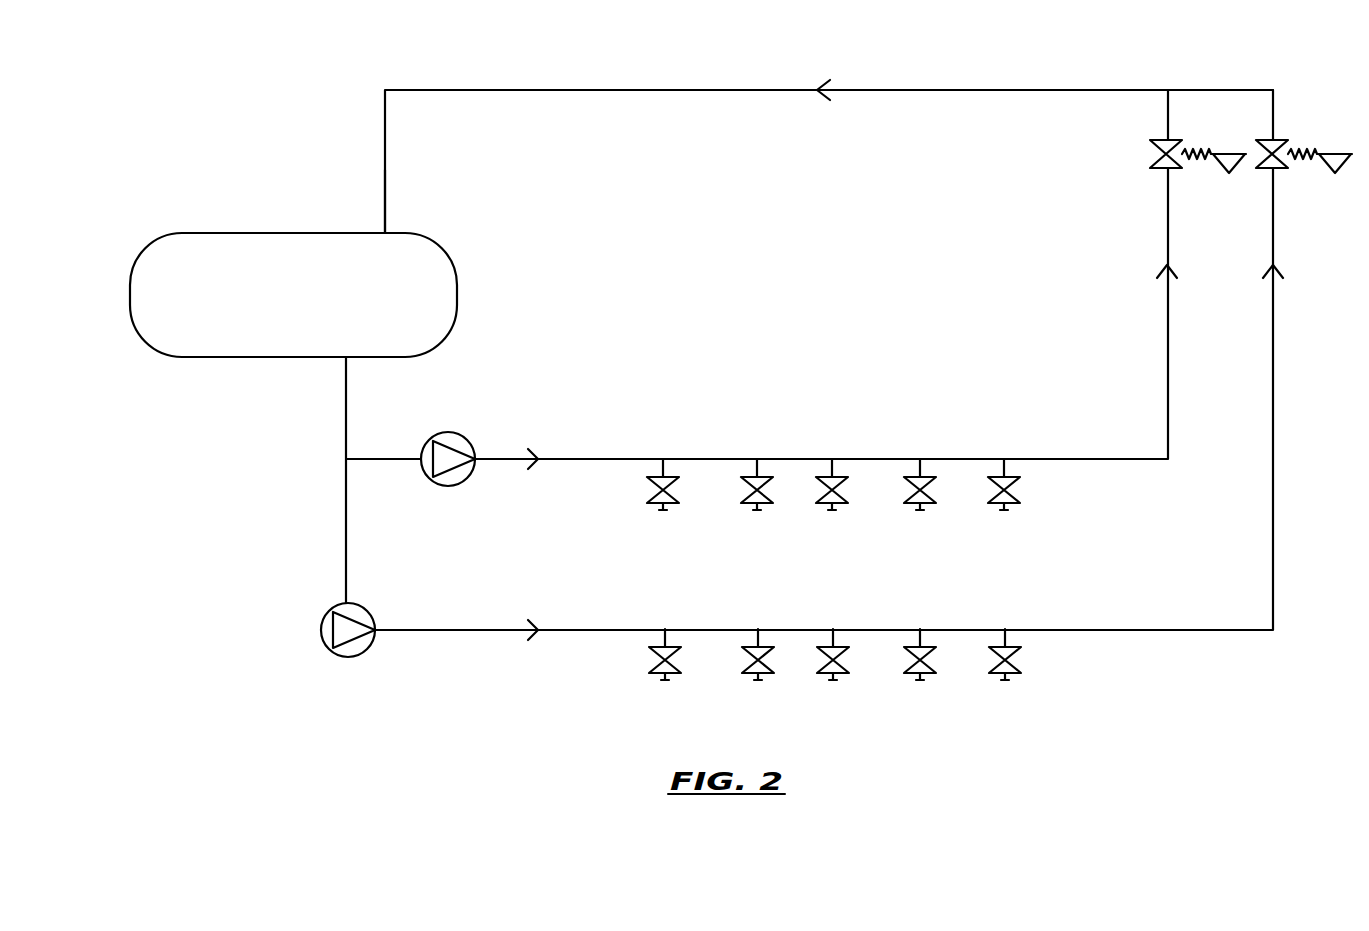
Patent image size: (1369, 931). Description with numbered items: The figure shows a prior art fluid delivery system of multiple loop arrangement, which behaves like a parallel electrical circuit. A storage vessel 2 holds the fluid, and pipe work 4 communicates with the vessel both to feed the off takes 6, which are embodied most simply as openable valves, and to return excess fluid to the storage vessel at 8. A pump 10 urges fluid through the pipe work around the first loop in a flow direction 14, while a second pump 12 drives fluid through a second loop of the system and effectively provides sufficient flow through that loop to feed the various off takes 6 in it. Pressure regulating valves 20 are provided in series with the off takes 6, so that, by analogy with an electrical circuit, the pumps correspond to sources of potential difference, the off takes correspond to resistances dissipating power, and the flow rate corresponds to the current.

The storage vessel 2 is at (313, 358).
The pipe work 4 is at (658, 92).
The off takes 6 is at (1003, 510).
The return to storage vessel 8 is at (386, 229).
The pump 10 is at (468, 441).
The second pump 12 is at (331, 651).
The flow direction 14 is at (821, 86).
The pressure regulating valve 20 is at (1197, 150).